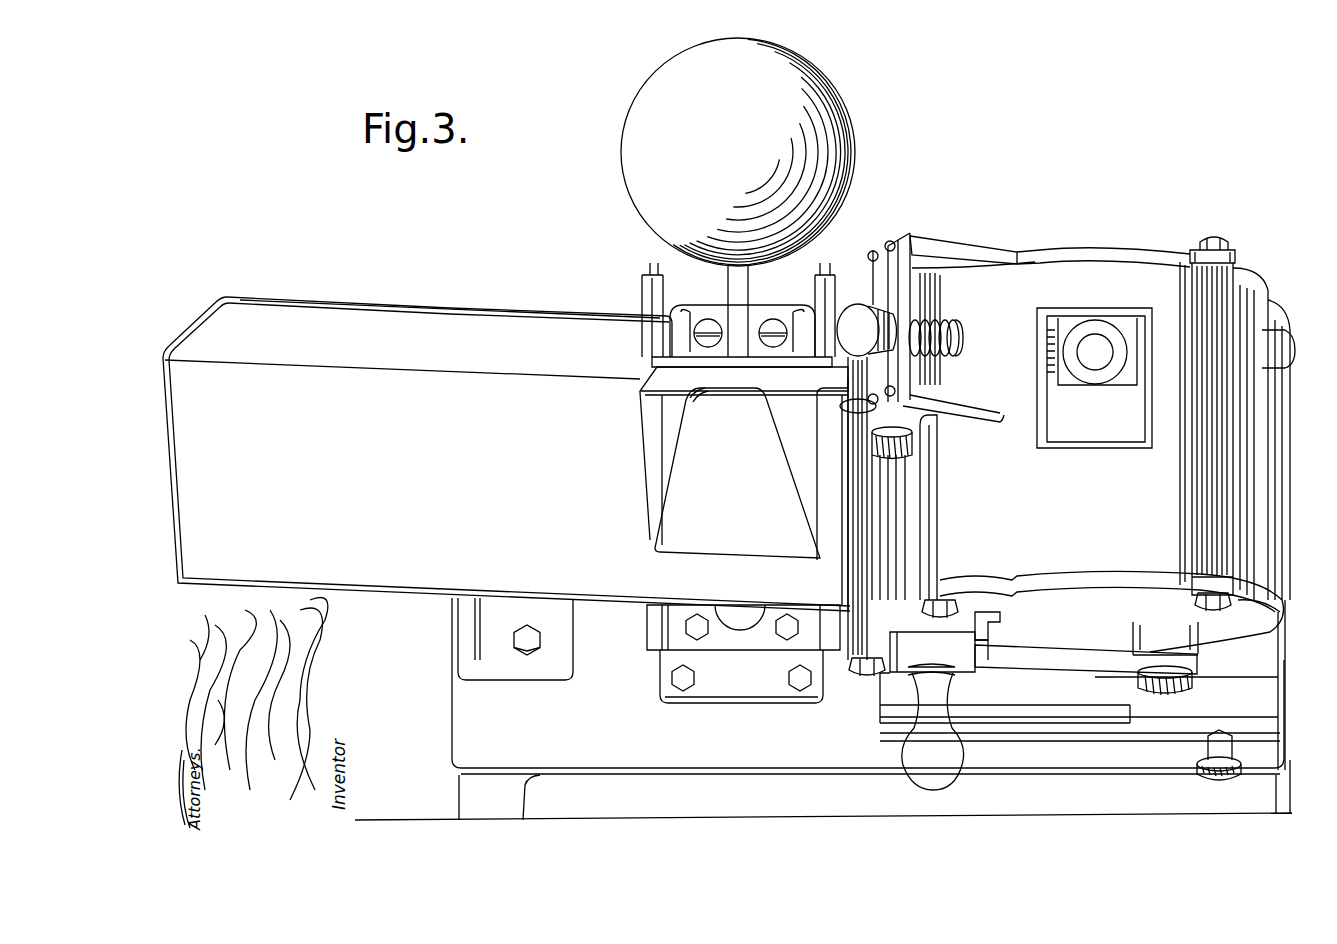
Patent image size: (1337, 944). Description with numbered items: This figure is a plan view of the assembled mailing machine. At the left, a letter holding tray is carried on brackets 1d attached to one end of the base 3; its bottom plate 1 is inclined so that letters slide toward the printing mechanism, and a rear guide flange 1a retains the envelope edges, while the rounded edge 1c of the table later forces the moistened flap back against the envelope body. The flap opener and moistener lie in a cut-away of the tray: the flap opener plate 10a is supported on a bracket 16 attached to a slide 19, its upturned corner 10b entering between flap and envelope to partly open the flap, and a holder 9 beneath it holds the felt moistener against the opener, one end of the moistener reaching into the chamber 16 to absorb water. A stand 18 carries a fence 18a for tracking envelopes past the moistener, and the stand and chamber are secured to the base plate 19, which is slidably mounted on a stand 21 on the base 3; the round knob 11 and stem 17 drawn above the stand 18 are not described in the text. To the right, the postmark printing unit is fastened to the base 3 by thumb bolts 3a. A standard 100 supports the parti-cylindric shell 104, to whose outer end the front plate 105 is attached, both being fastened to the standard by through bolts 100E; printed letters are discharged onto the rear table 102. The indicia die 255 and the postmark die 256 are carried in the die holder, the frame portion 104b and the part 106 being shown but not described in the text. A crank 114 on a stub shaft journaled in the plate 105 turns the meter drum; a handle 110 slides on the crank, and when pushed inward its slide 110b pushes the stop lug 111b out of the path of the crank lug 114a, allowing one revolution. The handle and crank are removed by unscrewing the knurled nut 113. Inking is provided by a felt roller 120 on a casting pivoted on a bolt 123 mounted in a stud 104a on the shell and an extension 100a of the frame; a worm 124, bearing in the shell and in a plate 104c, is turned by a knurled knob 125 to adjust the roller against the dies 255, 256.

The bottom plate 1 is at (355, 560).
The rear guide plate or flange 1a is at (435, 335).
The rounded edge 1c is at (822, 413).
The brackets 1d is at (488, 648).
The base 3 is at (470, 740).
The thumb bolts 3a is at (1217, 775).
The holder 9 is at (742, 612).
The flap opener plate 10a is at (745, 535).
The upturned corner 10b is at (702, 392).
The handle knob 11 is at (842, 156).
The bracket or chamber 16 is at (752, 642).
The handle stem 17 is at (742, 302).
The stand 18 is at (692, 358).
The fence 18a is at (662, 380).
The slide or base plate 19 is at (678, 263).
The stand 21 is at (762, 681).
The standard 100 is at (1125, 254).
The extension of the frame 100a is at (935, 250).
The through bolts 100E is at (945, 600).
The rear table 102 is at (1262, 680).
The parti-cylindric hood or shell 104 is at (845, 588).
The stud 104a is at (948, 402).
The die holder frame 104b is at (1080, 311).
The plate 104c is at (888, 277).
The front plate 105 is at (1078, 580).
The slide plate 106 is at (880, 705).
The handle 110 is at (945, 762).
The slide 110b is at (962, 655).
The stop lug 111b is at (998, 613).
The knurled nut 113 is at (1168, 688).
The handle or crank 114 is at (1048, 654).
The lug 114a is at (990, 639).
The felt roller 120 is at (848, 395).
The bolt 123 is at (892, 457).
The worm 124 is at (935, 334).
The knurled knob 125 is at (868, 305).
The indicia die 255 is at (1045, 381).
The postmark die 256 is at (1098, 378).